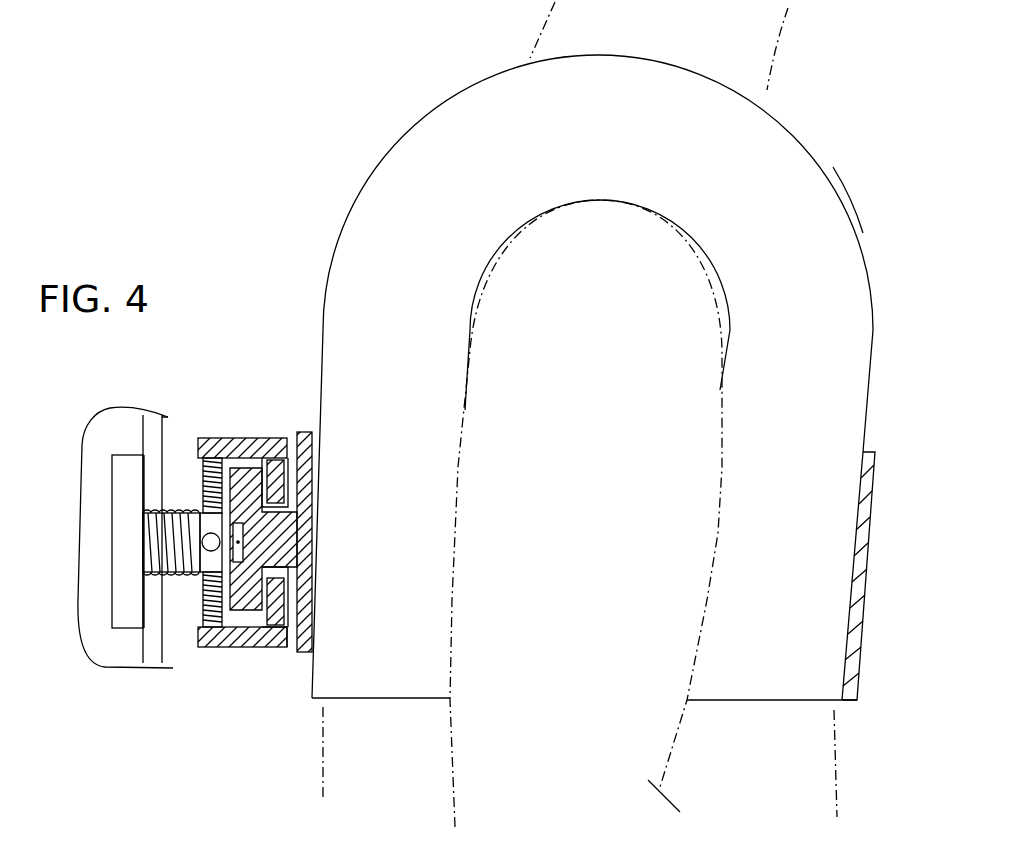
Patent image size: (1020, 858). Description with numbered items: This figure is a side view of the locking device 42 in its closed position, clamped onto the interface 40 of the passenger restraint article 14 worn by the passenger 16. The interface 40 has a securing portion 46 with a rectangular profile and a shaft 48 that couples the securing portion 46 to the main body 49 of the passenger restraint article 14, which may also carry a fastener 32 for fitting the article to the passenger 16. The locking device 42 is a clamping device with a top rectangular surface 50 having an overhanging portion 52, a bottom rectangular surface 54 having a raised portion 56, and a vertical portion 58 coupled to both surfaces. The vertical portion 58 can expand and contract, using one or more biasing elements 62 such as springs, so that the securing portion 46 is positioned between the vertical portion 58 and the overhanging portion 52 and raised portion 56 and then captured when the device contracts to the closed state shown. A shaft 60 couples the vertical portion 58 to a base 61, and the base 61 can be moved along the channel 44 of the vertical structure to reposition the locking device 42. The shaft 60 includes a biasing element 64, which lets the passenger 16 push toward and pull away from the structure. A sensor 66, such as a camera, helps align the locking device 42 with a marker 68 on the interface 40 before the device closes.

The passenger restraint article 14 is at (777, 130).
The passenger 16 is at (560, 28).
The main body 49 is at (805, 177).
The fastener 32 is at (857, 653).
The interface 40 is at (250, 480).
The locking device 42 is at (200, 566).
The channel 44 is at (157, 652).
The securing portion 46 is at (270, 647).
The shaft 48 is at (287, 540).
The top rectangular surface 50 is at (262, 450).
The overhanging portion 52 is at (287, 486).
The bottom rectangular surface 54 is at (230, 642).
The raised portion 56 is at (275, 607).
The vertical portion 58 is at (203, 597).
The shaft 60 is at (117, 543).
The base 61 is at (123, 485).
The biasing element 62 is at (203, 477).
The biasing element 64 is at (165, 517).
The sensor 66 is at (203, 543).
The marker 68 is at (242, 532).